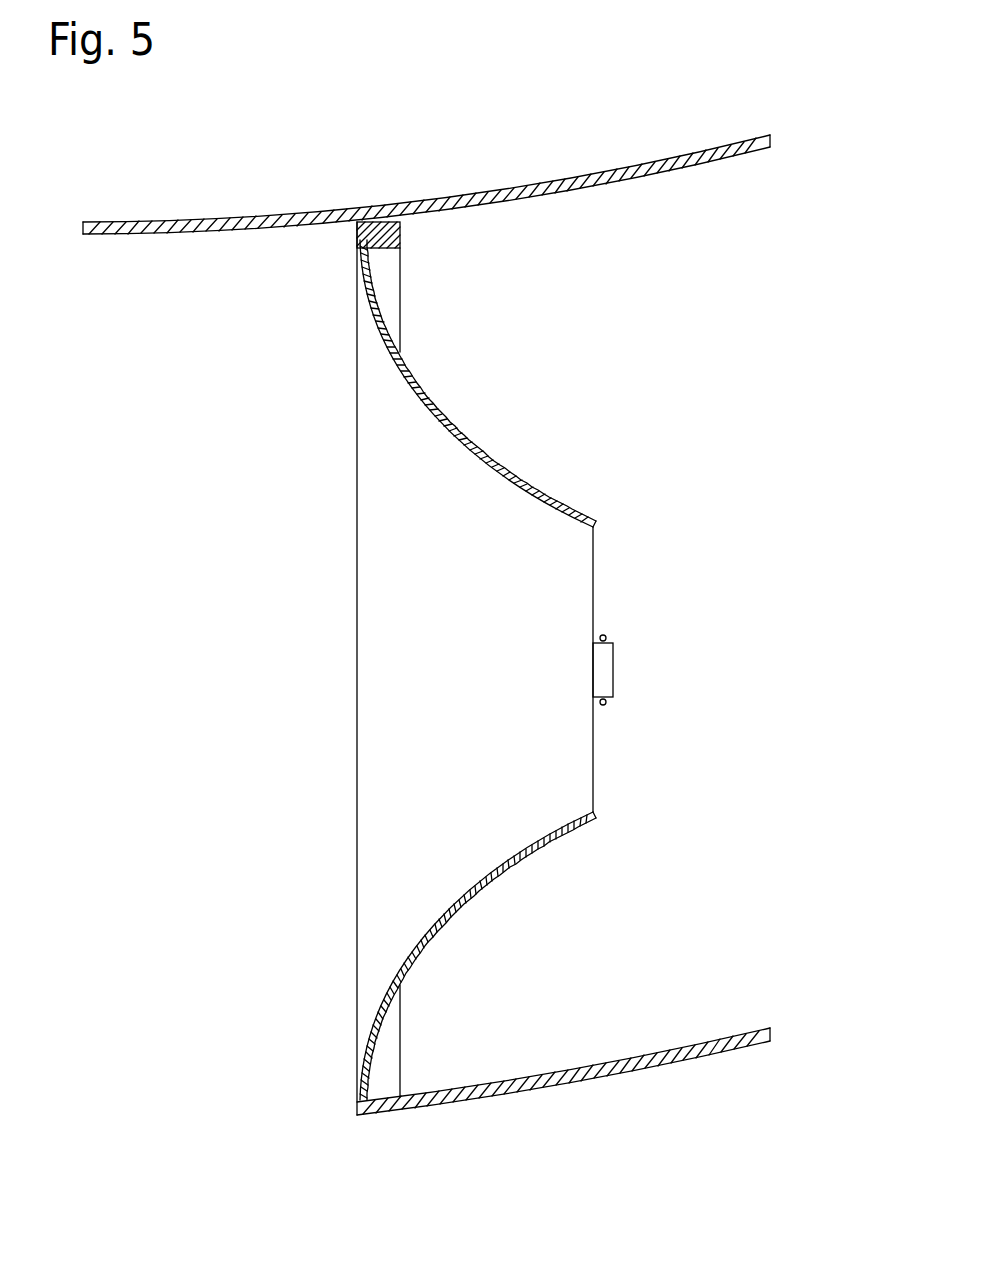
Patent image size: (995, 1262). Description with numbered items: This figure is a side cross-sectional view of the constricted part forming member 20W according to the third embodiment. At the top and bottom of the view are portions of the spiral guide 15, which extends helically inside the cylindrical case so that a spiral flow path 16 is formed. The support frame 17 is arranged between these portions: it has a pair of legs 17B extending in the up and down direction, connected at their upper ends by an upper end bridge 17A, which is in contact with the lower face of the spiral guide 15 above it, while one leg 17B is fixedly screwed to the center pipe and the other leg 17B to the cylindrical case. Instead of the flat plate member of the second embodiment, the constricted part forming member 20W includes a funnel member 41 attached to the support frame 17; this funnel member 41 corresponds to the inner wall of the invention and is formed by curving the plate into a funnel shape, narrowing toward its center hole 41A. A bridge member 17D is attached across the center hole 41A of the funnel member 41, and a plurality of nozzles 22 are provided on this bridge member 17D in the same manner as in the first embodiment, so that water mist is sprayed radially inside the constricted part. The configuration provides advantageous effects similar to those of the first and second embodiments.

The spiral guide 15 is at (722, 1055).
The spiral flow path 16 is at (638, 1026).
The support frame 17 is at (413, 264).
The upper end bridge 17A is at (393, 243).
The leg 17B is at (383, 1077).
The bridge member 17D is at (613, 670).
The constricted part forming member 20W is at (466, 905).
The nozzle 22 is at (603, 633).
The funnel member 41 is at (520, 434).
The center hole 41A is at (593, 545).